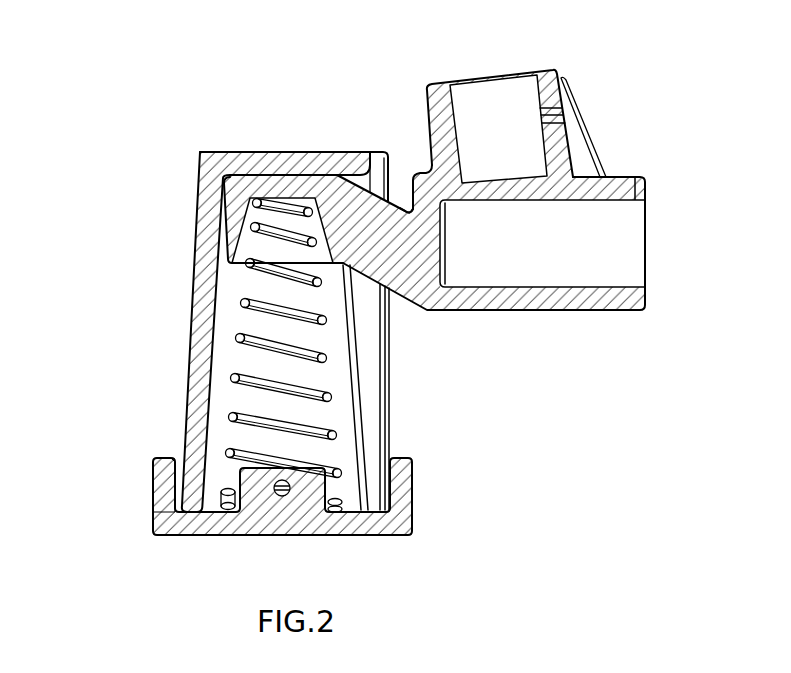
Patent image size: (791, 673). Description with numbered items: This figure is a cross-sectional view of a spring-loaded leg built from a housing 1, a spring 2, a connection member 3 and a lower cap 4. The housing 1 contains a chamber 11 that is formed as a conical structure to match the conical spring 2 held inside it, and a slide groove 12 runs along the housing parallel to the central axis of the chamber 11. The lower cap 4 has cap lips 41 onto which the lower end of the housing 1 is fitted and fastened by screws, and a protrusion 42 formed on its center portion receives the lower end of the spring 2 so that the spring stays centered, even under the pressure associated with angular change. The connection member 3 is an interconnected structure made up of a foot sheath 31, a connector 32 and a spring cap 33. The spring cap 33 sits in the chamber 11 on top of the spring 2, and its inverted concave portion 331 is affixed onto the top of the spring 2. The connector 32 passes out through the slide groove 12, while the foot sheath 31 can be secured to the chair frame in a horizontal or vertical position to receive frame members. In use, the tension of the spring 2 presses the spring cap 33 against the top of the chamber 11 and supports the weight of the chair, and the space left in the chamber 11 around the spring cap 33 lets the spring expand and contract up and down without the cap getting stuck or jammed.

The housing 1 is at (192, 337).
The chamber 11 is at (338, 413).
The slide groove 12 is at (357, 381).
The spring 2 is at (231, 407).
The connection member 3 is at (512, 311).
The foot sheath 31 is at (485, 98).
The connector 32 is at (405, 208).
The spring cap 33 is at (224, 246).
The inverted concave portion 331 is at (256, 260).
The lower cap 4 is at (254, 508).
The cap lip 41 is at (157, 460).
The protrusion 42 is at (234, 471).